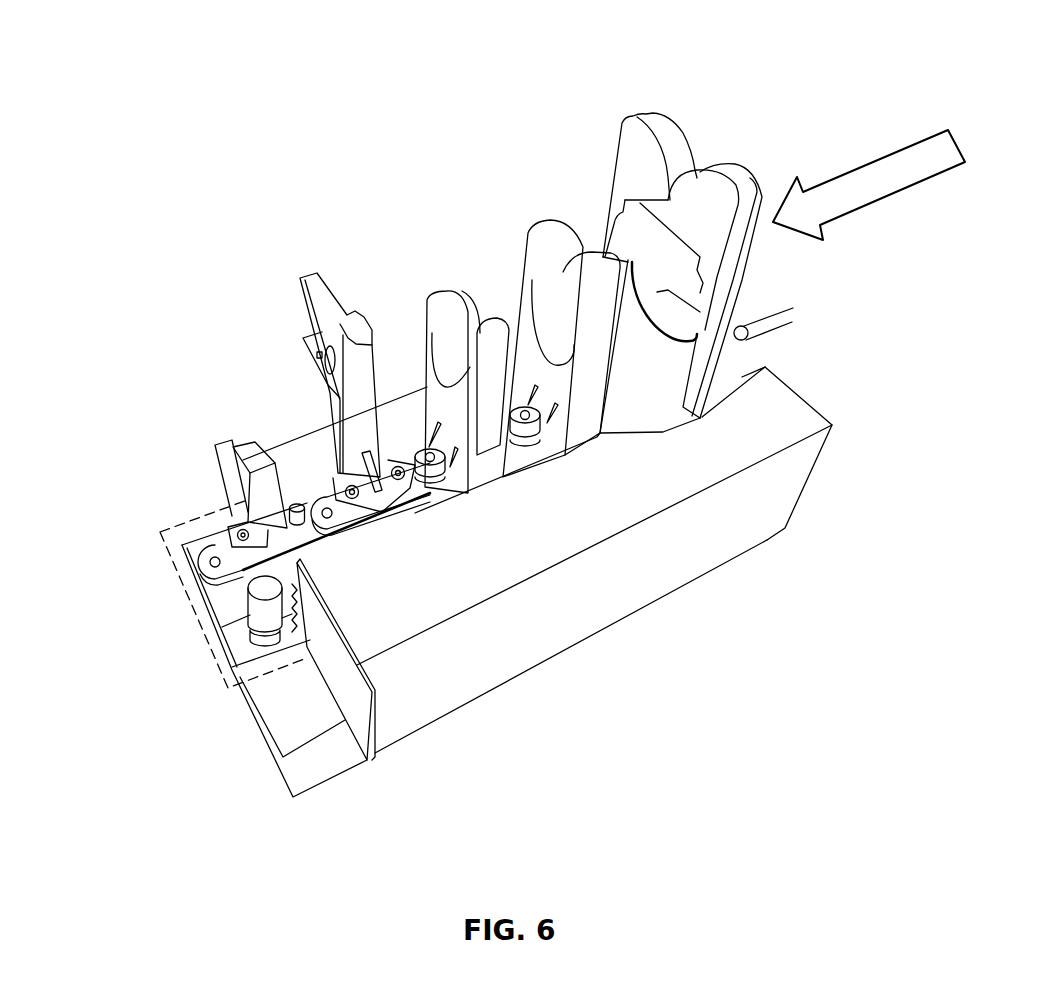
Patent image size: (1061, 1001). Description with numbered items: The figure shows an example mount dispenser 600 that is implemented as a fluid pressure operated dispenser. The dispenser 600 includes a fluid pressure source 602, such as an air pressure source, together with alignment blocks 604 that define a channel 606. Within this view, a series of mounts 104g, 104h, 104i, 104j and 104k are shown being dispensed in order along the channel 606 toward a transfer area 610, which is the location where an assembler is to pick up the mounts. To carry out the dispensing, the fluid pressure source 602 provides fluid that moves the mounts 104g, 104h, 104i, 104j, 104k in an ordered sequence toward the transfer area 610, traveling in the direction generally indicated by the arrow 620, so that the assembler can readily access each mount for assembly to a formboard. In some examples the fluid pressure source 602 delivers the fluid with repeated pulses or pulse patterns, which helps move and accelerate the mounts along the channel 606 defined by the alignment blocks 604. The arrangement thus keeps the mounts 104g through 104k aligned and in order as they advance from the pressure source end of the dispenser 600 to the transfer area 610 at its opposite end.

The mount dispenser 600 is at (778, 63).
The fluid pressure source 602 is at (785, 307).
The alignment blocks 604 is at (538, 637).
The channel 606 is at (527, 463).
The transfer area 610 is at (179, 575).
The arrow 620 is at (947, 130).
The mount 104g is at (229, 422).
The mount 104h is at (304, 263).
The mount 104i is at (431, 285).
The mount 104j is at (533, 215).
The mount 104k is at (637, 105).